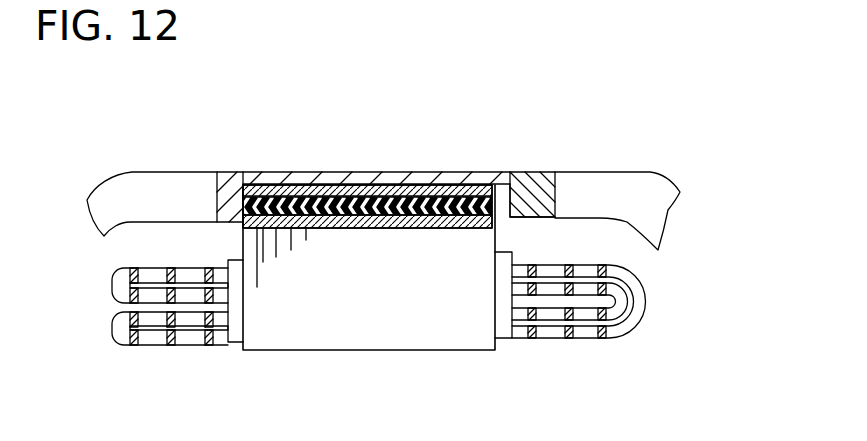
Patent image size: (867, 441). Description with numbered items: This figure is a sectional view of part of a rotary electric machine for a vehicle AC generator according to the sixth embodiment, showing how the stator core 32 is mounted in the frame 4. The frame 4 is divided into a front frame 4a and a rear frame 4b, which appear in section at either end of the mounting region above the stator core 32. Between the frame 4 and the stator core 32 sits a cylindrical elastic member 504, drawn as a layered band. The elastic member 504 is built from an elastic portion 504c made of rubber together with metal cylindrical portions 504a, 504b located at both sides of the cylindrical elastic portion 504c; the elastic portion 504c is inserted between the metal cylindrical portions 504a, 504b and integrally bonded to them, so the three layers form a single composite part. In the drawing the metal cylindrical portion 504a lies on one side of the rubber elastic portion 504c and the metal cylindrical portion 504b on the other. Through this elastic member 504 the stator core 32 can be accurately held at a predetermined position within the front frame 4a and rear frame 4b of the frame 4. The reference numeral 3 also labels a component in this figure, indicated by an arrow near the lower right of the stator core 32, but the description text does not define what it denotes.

The connector terminal assembly 3 is at (585, 353).
The frame 4 is at (610, 163).
The front frame 4a is at (225, 193).
The rear frame 4b is at (540, 207).
The stator core 32 is at (370, 325).
The elastic member 504 is at (394, 150).
The metal cylindrical portion 504a is at (310, 183).
The metal cylindrical portion 504b is at (441, 217).
The elastic portion 504c is at (386, 202).